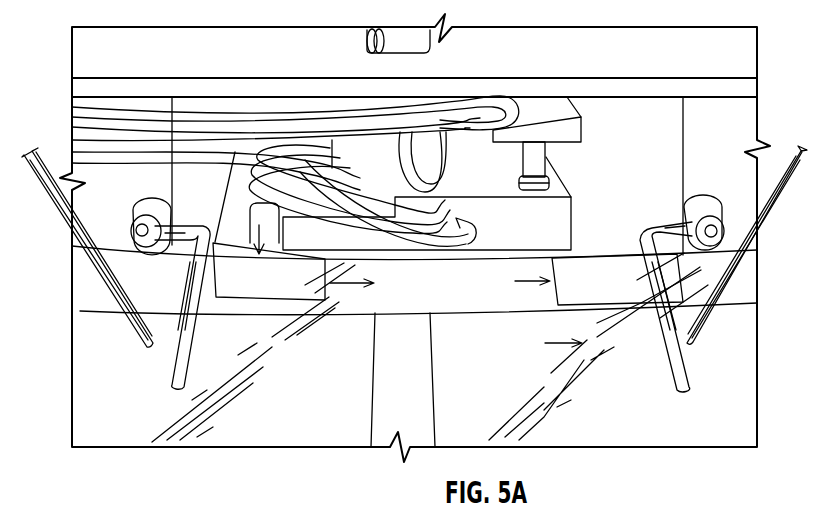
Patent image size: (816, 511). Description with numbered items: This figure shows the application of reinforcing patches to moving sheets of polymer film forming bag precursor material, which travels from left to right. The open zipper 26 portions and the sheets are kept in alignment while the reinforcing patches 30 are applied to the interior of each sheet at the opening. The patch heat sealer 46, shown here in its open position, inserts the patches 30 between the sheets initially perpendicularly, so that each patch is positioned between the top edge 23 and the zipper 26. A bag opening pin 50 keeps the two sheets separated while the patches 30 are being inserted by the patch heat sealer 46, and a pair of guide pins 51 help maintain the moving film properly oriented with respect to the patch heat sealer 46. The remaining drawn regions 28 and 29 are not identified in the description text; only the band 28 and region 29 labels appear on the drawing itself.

The top edge 23 is at (612, 254).
The zipper 26 is at (475, 316).
The conveyor band 28 is at (462, 297).
The base region 29 is at (340, 436).
The patches 30 is at (258, 294).
The patch heat sealer 46 is at (548, 237).
The bag opening pin 50 is at (101, 268).
The guide pins 51 is at (170, 368).